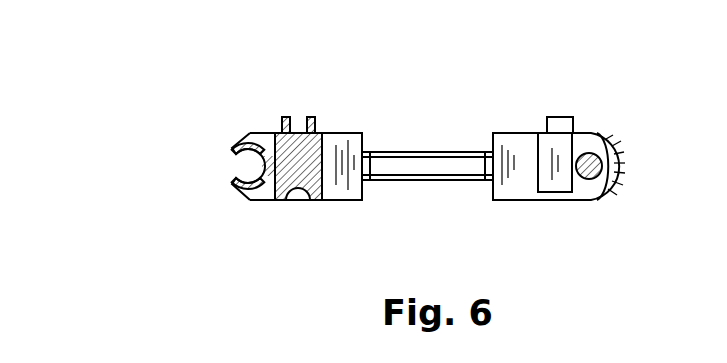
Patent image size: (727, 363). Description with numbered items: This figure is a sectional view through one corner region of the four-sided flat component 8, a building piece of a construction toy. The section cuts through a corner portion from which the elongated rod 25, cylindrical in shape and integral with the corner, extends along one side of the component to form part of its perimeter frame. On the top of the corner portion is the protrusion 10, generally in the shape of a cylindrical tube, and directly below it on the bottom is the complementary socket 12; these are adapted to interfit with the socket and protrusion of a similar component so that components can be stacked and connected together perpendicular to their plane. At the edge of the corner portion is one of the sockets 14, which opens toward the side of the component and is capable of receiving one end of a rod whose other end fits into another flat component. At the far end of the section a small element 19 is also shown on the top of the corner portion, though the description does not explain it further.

The four-sided flat component 8 is at (531, 218).
The protrusion 10 is at (313, 117).
The complementary socket 12 is at (298, 190).
The socket 14 is at (237, 168).
The cap 19 is at (558, 117).
The elongated rod 25 is at (420, 162).